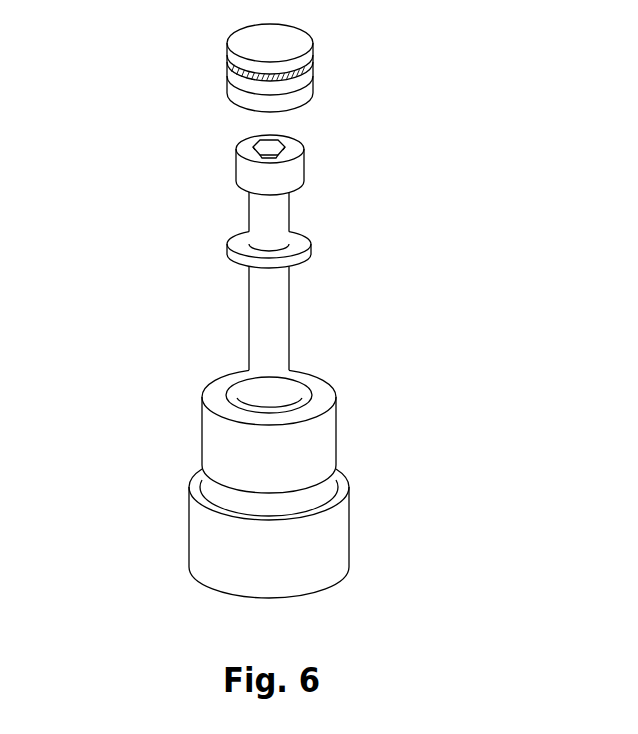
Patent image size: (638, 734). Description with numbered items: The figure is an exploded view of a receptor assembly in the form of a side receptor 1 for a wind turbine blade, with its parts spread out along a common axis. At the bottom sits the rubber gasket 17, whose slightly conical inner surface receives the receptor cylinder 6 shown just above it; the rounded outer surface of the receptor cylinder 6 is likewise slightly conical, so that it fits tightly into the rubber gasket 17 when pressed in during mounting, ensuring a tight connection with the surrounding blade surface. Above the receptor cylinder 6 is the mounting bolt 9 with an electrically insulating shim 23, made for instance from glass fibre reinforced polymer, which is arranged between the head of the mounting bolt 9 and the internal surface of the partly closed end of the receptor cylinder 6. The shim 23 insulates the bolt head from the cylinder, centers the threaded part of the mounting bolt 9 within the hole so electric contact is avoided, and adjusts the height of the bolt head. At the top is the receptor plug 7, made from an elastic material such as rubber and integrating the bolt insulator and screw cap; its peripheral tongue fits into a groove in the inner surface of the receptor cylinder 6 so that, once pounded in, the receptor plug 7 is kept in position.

The side receptor 1 is at (453, 129).
The receptor plug 7 is at (245, 68).
The mounting bolt 9 is at (262, 185).
The electrically insulating shim 23 is at (292, 246).
The receptor cylinder 6 is at (243, 433).
The rubber gasket 17 is at (292, 533).